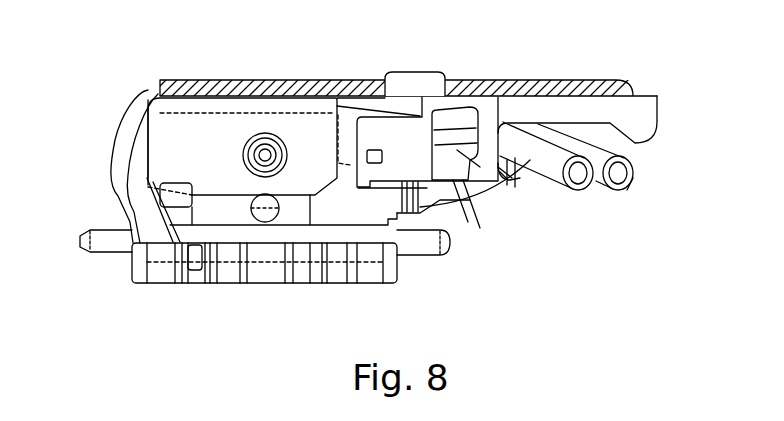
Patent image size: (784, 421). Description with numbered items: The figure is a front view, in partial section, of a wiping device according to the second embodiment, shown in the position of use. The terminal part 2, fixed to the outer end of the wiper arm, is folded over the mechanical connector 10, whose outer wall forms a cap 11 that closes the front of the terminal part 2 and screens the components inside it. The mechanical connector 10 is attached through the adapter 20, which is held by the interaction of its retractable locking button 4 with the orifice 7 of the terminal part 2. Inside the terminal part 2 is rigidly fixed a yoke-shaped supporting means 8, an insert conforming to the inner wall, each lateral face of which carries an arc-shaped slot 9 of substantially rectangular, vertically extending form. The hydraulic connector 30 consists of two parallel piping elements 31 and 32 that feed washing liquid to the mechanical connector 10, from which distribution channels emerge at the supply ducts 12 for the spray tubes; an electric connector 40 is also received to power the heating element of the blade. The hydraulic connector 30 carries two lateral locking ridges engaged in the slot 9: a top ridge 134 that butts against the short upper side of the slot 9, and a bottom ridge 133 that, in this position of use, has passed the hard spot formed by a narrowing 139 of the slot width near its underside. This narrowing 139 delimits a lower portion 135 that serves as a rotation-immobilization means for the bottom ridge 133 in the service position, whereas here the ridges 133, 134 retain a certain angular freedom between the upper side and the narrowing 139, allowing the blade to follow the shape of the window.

The terminal part 2 is at (300, 80).
The retractable locking button 4 is at (415, 83).
The orifice 7 is at (375, 80).
The supporting means 8 is at (638, 117).
The slot 9 is at (477, 127).
The mechanical connector 10 is at (198, 272).
The cap 11 is at (122, 145).
The supply ducts 12 is at (103, 253).
The adapter 20 is at (177, 123).
The hydraulic connector 30 is at (548, 143).
The piping element 31 is at (637, 180).
The piping element 32 is at (583, 190).
The electric connector 40 is at (440, 200).
The bottom ridge 133 is at (468, 200).
The top ridge 134 is at (457, 115).
The lower portion 135 is at (483, 200).
The narrowing 139 is at (522, 203).